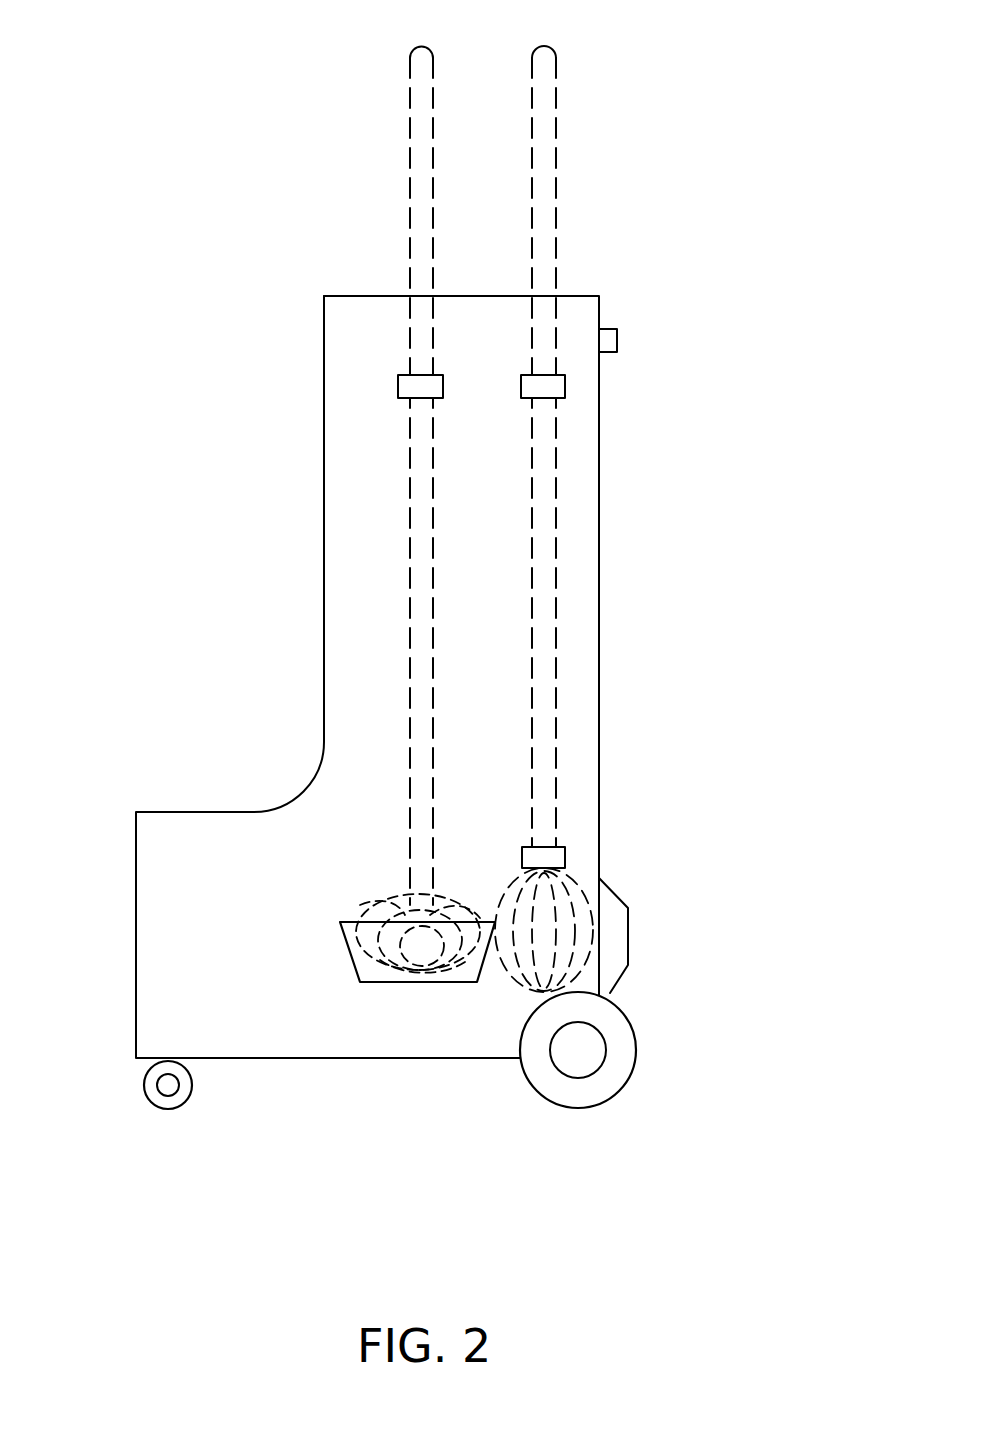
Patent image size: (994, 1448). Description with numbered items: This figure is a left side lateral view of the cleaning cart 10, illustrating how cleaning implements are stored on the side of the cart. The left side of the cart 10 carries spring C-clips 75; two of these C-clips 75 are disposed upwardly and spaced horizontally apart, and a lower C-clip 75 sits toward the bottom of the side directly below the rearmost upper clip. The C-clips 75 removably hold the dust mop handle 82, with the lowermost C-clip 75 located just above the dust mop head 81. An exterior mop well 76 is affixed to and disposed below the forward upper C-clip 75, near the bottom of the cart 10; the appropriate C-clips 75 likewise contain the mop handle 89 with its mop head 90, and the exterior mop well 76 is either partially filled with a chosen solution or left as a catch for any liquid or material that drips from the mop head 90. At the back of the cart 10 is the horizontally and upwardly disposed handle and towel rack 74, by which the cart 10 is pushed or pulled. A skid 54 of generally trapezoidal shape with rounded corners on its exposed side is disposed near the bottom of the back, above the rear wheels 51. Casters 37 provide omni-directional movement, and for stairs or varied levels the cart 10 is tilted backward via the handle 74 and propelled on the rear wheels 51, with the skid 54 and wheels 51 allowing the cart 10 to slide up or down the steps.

The cart 10 is at (160, 214).
The casters 37 is at (168, 1109).
The rear wheels 51 is at (632, 1048).
The skid 54 is at (638, 960).
The handle and towel rack 74 is at (618, 335).
The spring C-clips 75 is at (398, 390).
The exterior mop well 76 is at (375, 982).
The dust mop head 81 is at (580, 892).
The dust mop handle 82 is at (555, 598).
The mop handle 89 is at (415, 205).
The mop head 90 is at (358, 854).